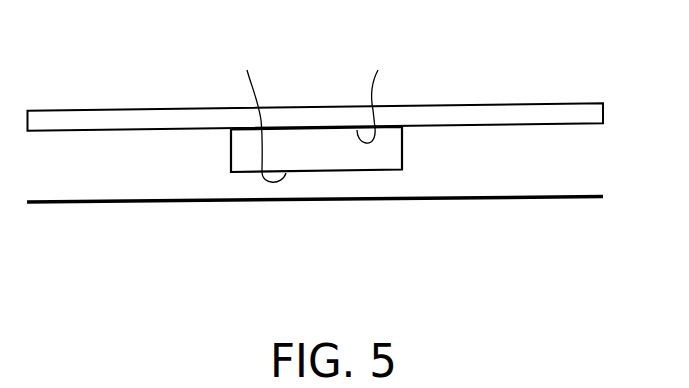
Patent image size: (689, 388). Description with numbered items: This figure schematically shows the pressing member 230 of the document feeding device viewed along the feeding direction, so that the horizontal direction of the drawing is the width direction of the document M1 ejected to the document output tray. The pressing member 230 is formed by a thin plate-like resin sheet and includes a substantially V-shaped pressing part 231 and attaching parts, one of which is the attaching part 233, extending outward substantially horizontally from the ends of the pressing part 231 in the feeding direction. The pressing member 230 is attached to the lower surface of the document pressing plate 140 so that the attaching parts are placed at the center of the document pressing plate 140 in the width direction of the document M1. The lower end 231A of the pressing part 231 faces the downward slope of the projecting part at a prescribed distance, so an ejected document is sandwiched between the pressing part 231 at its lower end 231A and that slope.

The document pressing plate 140 is at (544, 102).
The pressing member 230 is at (406, 133).
The pressing part 231 is at (393, 157).
The lower end 231A is at (250, 110).
The attaching part 233 is at (389, 91).
The document M1 is at (477, 200).